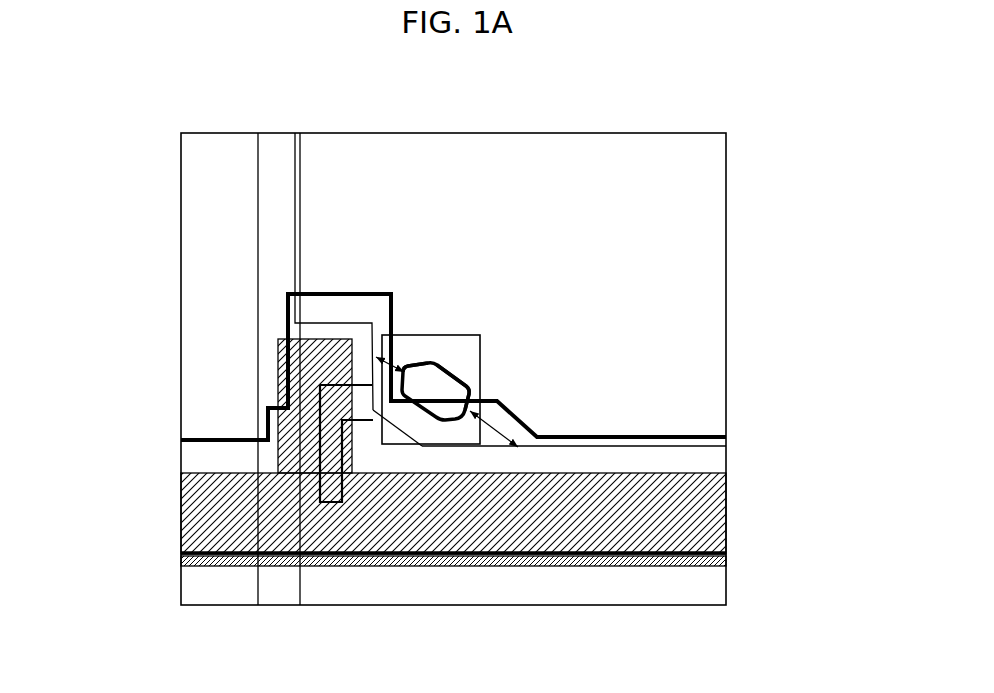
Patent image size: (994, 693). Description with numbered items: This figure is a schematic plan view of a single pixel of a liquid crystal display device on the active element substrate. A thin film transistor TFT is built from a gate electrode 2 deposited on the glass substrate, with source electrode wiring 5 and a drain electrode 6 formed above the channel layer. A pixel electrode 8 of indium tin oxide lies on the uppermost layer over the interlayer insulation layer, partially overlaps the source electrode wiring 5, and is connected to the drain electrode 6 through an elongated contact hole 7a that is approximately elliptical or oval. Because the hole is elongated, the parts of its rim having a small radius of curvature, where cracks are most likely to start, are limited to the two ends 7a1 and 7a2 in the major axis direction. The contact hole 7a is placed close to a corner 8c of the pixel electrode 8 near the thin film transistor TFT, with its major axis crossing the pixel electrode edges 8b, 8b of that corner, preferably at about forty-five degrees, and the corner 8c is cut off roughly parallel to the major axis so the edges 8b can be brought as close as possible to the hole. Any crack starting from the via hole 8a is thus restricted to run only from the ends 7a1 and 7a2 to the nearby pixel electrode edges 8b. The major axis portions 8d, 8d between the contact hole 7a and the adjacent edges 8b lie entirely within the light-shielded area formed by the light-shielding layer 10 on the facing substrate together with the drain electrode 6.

The gate electrode 2 is at (697, 520).
The source electrode wiring 5 is at (258, 257).
The drain electrode 6 is at (421, 335).
The contact hole 7a is at (452, 383).
The end of contact hole 7a1 is at (476, 405).
The end of contact hole 7a2 is at (420, 352).
The pixel electrode 8 is at (693, 312).
The via hole 8a is at (450, 390).
The pixel electrode edge 8b is at (372, 368).
The corner of pixel electrode 8c is at (423, 447).
The major axis portion 8d is at (391, 363).
The light-shielding layer 10 is at (703, 437).
The thin film transistor TFT is at (356, 453).